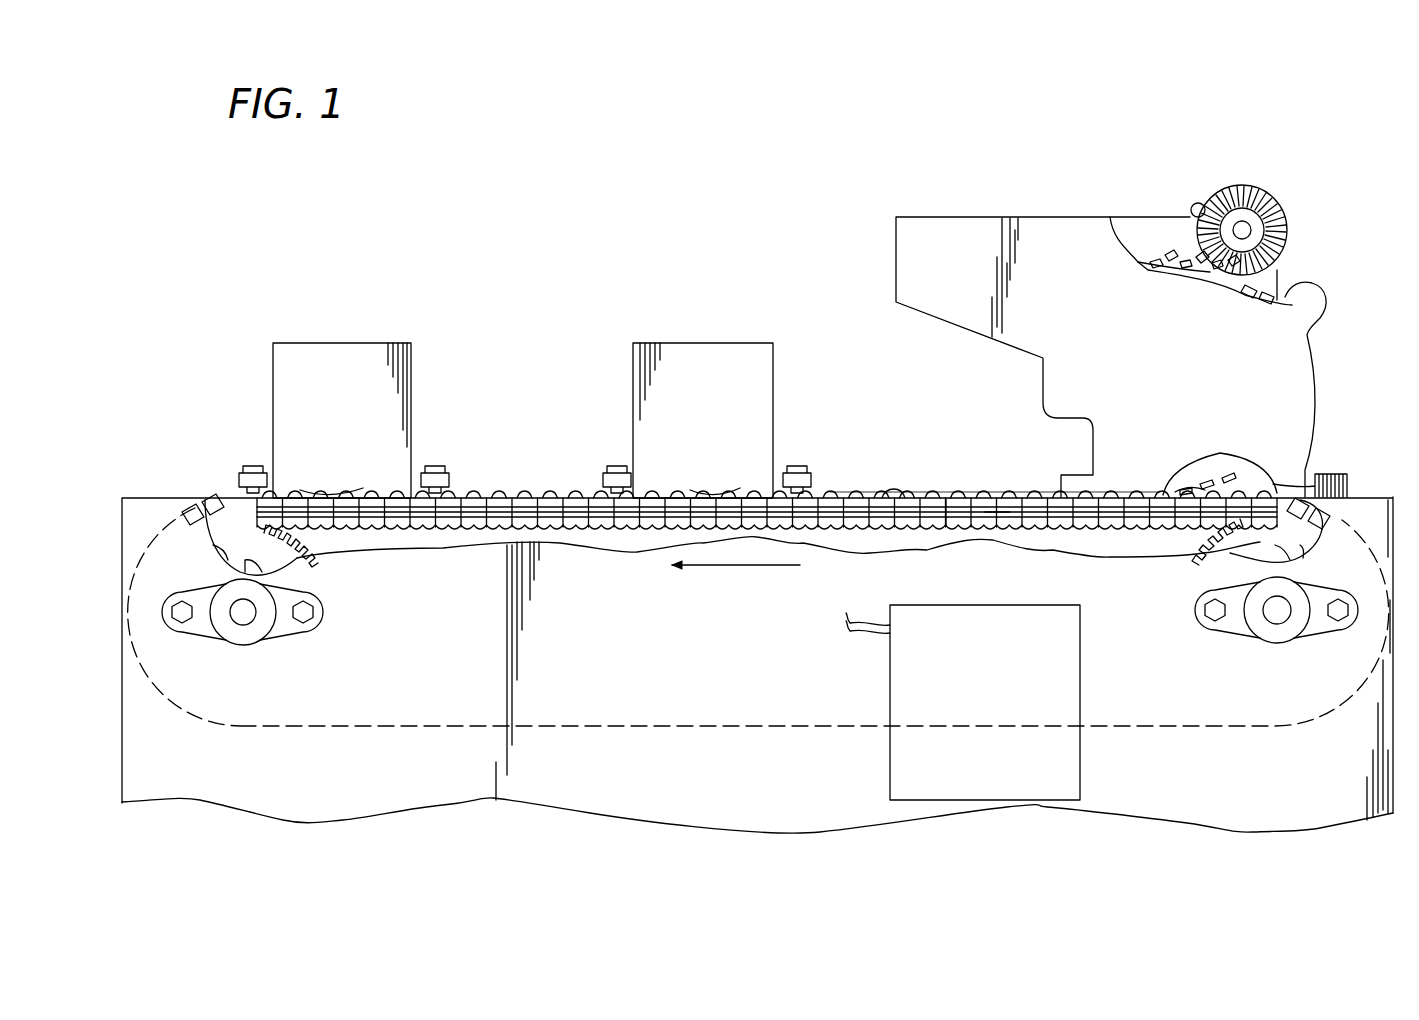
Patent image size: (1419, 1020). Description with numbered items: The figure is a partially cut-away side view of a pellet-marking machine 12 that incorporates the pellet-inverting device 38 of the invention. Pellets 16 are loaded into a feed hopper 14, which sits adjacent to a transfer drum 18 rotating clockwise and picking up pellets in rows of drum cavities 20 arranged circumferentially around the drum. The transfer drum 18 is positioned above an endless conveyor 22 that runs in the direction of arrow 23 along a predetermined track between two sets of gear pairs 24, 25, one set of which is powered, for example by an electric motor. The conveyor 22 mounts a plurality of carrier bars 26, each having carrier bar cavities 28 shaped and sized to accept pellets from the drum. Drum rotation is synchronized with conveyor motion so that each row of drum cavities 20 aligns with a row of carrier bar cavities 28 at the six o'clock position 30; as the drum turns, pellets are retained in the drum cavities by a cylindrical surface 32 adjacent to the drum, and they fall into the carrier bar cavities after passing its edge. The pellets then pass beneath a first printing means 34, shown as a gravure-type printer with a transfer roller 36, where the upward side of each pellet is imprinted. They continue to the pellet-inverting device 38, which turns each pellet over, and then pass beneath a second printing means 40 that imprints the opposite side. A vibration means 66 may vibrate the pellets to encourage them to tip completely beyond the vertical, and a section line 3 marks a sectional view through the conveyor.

The pellet-marking machine 12 is at (493, 255).
The feed hopper 14 is at (961, 223).
The pellets 16 is at (1140, 250).
The transfer drum 18 is at (1222, 477).
The drum cavities 20 is at (1168, 245).
The endless conveyor 22 is at (943, 510).
The arrow 23 is at (727, 567).
The gear pair 24 is at (1222, 550).
The gear pair 25 is at (308, 555).
The carrier bars 26 is at (990, 510).
The carrier bar cavities 28 is at (888, 497).
The six o'clock position 30 is at (1192, 487).
The cylindrical surface 32 is at (1298, 490).
The first printing means 34 is at (705, 350).
The transfer roller 36 is at (325, 492).
The pellet-inverting device 38 is at (497, 470).
The second printing means 40 is at (358, 348).
The vibration means 66 is at (1068, 779).
The section line 3 is at (357, 530).